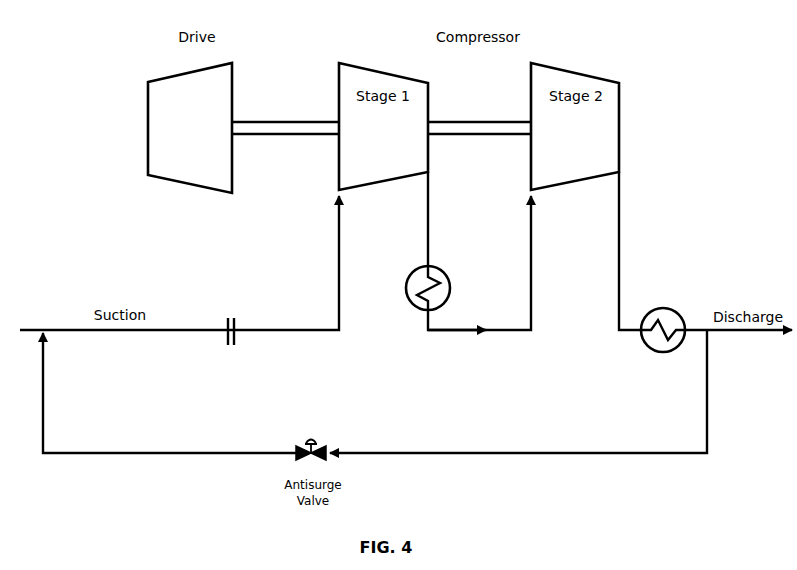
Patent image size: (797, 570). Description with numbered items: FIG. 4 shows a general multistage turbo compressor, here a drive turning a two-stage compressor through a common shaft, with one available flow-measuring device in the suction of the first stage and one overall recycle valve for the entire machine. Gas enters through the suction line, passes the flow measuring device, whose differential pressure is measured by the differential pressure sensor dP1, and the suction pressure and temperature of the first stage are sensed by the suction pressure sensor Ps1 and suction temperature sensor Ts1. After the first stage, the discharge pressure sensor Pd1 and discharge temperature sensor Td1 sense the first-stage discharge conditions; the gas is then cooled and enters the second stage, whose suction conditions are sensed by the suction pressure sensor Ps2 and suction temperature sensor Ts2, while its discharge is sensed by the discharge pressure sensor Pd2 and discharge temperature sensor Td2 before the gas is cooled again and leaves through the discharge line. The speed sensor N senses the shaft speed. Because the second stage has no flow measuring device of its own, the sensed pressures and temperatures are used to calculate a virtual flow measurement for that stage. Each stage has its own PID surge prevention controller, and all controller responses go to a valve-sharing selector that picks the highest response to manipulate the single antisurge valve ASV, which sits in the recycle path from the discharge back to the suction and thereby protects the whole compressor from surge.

The speed sensor N is at (287, 134).
The stage 1 discharge temperature sensor Td1 is at (428, 192).
The stage 1 discharge pressure sensor Pd1 is at (428, 248).
The stage 2 discharge temperature sensor Td2 is at (619, 202).
The stage 2 discharge pressure sensor Pd2 is at (619, 260).
The stage 1 suction pressure sensor Ps1 is at (94, 330).
The stage 1 suction temperature sensor Ts1 is at (153, 330).
The flow measuring device differential pressure sensor dP1 is at (198, 330).
The stage 2 suction pressure sensor Ps2 is at (450, 330).
The stage 2 suction temperature sensor Ts2 is at (518, 330).
The antisurge valve ASV is at (311, 450).